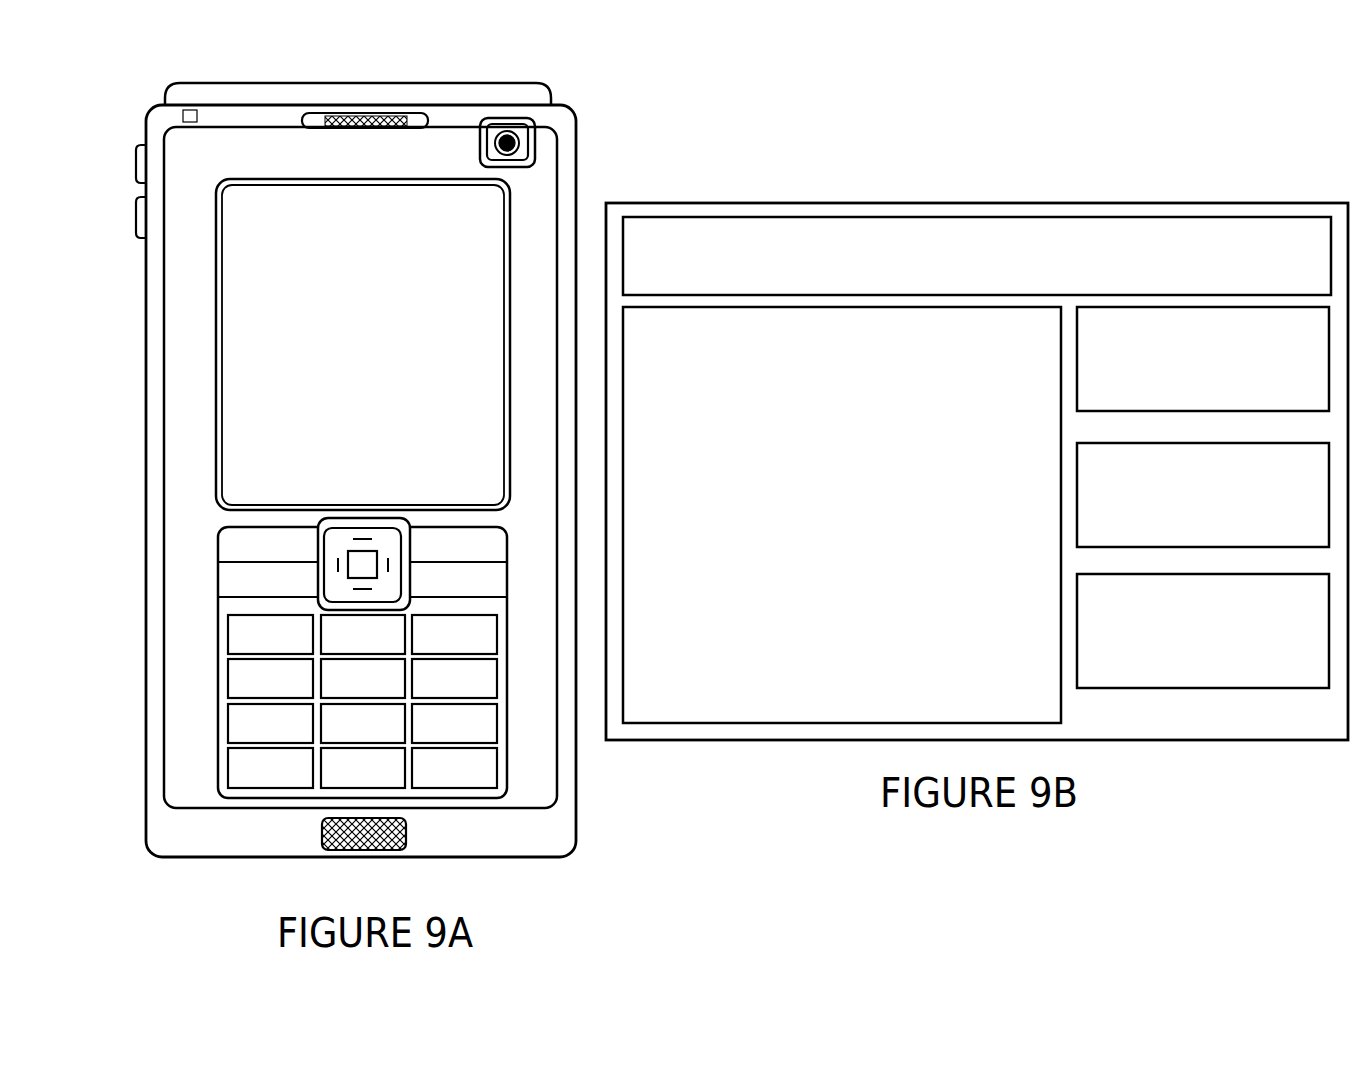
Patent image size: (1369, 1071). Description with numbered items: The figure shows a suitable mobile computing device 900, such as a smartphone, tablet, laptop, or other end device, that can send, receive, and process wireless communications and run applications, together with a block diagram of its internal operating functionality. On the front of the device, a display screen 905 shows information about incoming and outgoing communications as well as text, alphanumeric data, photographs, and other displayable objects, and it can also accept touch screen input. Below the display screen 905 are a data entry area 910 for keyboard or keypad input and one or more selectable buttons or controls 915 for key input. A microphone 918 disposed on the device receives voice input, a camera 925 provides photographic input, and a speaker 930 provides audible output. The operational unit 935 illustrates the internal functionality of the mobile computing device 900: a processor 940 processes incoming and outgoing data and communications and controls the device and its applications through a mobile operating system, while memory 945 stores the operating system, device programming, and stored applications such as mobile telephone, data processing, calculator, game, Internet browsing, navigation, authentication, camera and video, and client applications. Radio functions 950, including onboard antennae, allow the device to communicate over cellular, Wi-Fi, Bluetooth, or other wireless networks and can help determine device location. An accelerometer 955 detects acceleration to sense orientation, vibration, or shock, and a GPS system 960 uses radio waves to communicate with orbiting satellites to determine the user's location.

In FIG. 9A, the mobile computing device 900 is at (138, 109).
In FIG. 9A, the display screen 905 is at (255, 325).
In FIG. 9A, the data entry area 910 is at (218, 573).
In FIG. 9A, the selectable buttons or controls 915 is at (242, 678).
In FIG. 9A, the microphone 918 is at (324, 836).
In FIG. 9A, the camera 925 is at (535, 152).
In FIG. 9A, the speaker 930 is at (408, 120).
In FIG. 9B, the operational unit 935 is at (1289, 196).
In FIG. 9B, the processor 940 is at (977, 256).
In FIG. 9B, the memory 945 is at (842, 515).
In FIG. 9B, the radio functions 950 is at (1203, 359).
In FIG. 9B, the accelerometer 955 is at (1203, 495).
In FIG. 9B, the GPS system 960 is at (1203, 631).